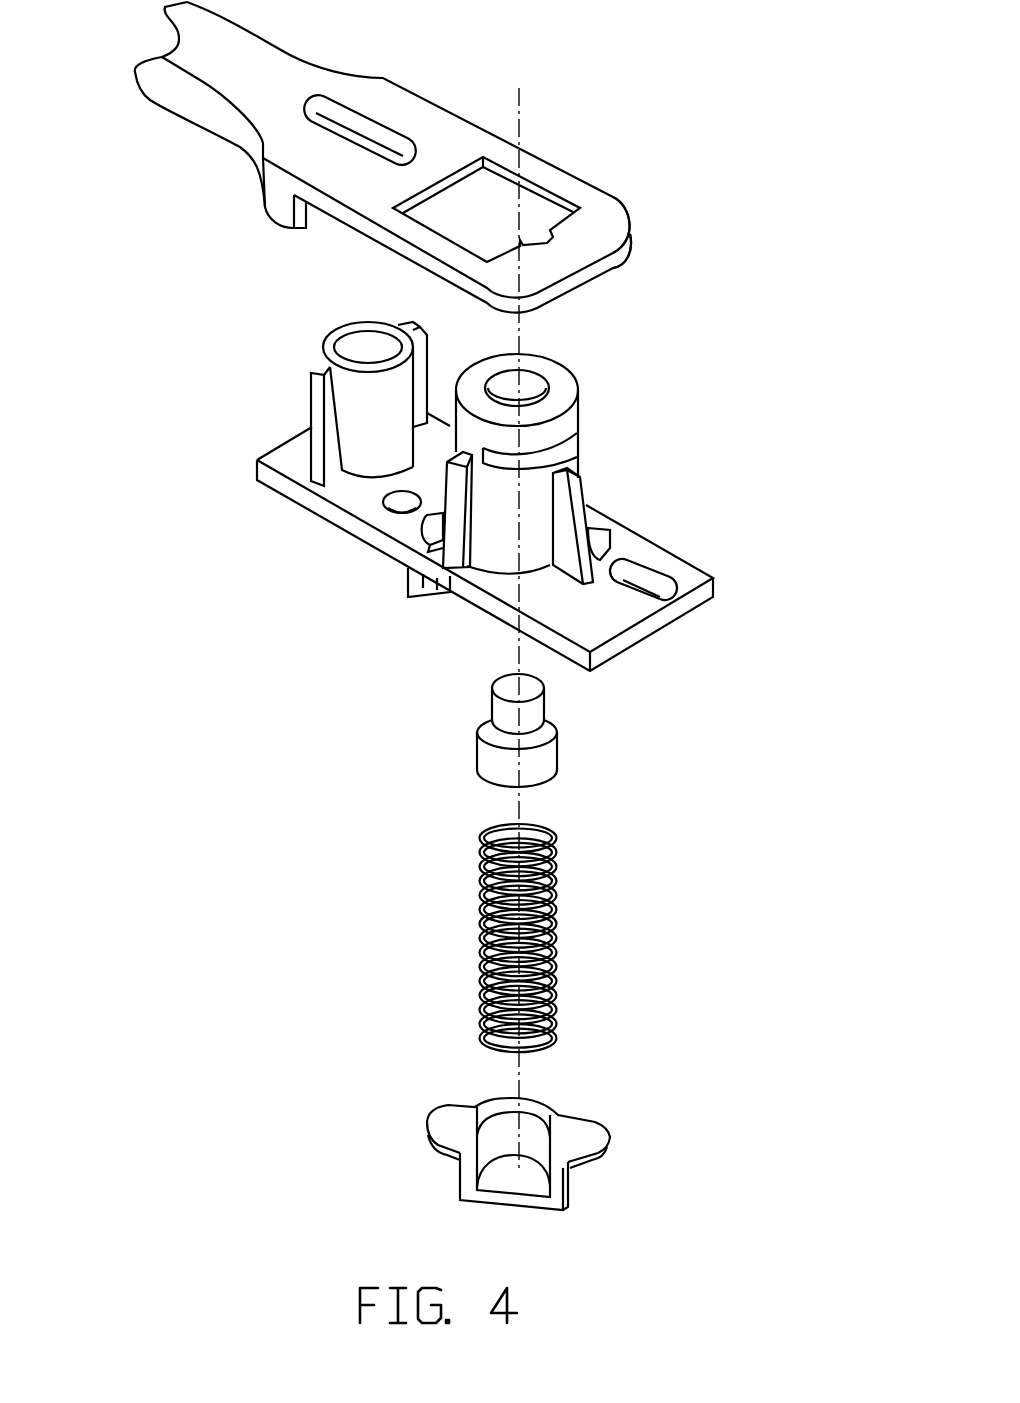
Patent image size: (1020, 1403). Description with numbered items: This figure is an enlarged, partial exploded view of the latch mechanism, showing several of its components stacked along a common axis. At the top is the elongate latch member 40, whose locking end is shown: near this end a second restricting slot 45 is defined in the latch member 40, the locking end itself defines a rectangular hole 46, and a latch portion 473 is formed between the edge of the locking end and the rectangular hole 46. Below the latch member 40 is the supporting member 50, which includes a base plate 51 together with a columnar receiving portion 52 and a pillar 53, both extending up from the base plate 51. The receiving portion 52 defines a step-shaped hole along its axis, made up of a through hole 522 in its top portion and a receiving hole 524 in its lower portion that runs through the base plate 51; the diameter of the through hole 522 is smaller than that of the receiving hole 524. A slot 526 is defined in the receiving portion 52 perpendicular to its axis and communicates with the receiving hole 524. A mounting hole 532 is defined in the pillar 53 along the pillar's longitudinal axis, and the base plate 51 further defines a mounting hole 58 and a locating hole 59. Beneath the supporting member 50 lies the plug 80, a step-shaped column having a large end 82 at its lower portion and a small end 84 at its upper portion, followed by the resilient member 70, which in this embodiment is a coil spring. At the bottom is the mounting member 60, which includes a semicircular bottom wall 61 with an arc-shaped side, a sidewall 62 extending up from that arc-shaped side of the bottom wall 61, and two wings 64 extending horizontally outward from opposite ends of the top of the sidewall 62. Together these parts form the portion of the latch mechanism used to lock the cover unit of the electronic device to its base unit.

The latch member 40 is at (404, 157).
The second restricting slot 45 is at (350, 116).
The rectangular hole 46 is at (533, 207).
The latch portion 473 is at (580, 240).
The supporting member 50 is at (474, 482).
The base plate 51 is at (623, 550).
The columnar receiving portion 52 is at (566, 450).
The through hole 522 is at (530, 381).
The receiving hole 524 is at (529, 394).
The slot 526 is at (570, 445).
The pillar 53 is at (320, 390).
The mounting hole 532 is at (352, 353).
The mounting hole 58 is at (400, 503).
The locating hole 59 is at (653, 580).
The resilient member 70 is at (550, 965).
The plug 80 is at (534, 730).
The large end 82 is at (493, 760).
The small end 84 is at (532, 710).
The mounting member 60 is at (570, 1151).
The semicircular bottom wall 61 is at (525, 1180).
The sidewall 62 is at (529, 1129).
The wings 64 is at (588, 1140).